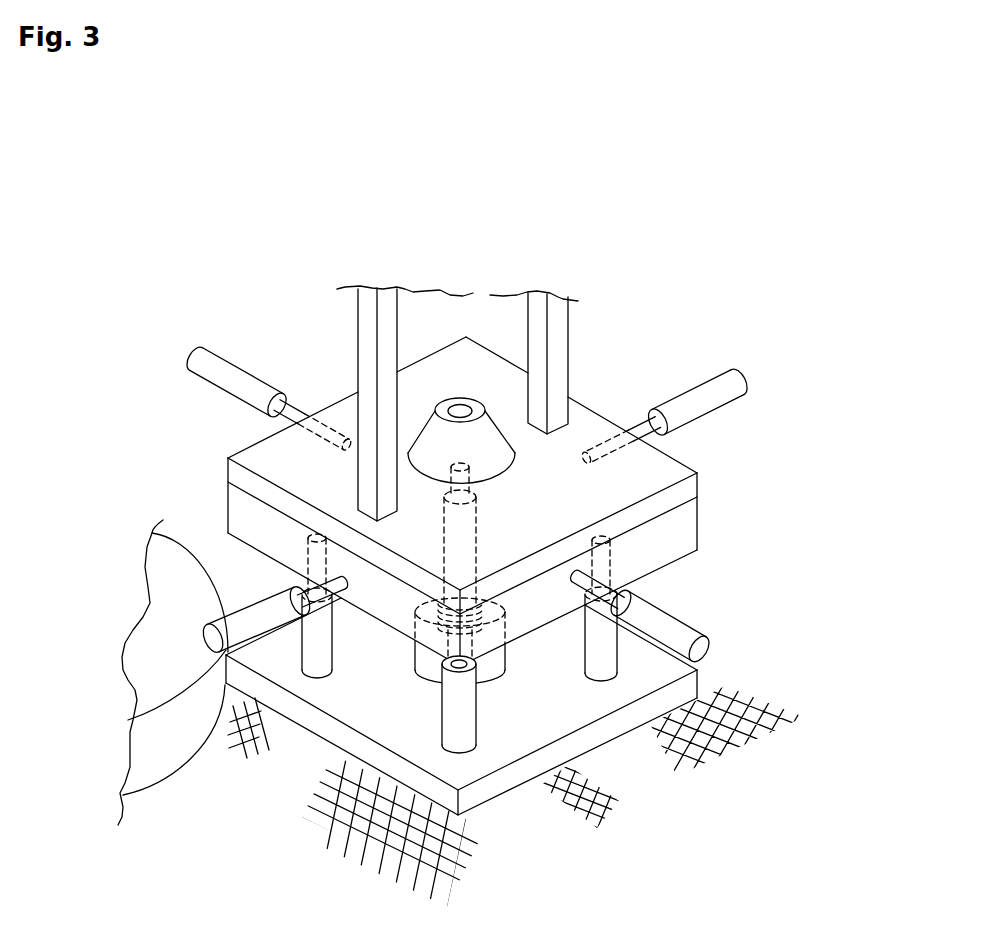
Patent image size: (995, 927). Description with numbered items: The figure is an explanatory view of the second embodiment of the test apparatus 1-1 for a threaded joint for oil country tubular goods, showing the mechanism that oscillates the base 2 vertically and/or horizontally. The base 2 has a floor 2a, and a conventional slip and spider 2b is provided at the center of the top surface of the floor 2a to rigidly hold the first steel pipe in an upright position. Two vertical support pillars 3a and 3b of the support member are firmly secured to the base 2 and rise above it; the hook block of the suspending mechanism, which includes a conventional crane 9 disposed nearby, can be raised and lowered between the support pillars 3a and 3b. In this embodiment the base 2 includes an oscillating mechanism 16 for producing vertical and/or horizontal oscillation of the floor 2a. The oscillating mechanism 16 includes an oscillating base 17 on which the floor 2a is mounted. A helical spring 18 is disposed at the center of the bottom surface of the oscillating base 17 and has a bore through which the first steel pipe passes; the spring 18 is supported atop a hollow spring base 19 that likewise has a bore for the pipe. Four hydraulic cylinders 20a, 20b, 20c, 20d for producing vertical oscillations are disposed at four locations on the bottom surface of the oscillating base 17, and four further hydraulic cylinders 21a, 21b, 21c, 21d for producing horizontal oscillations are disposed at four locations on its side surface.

The test apparatus 1-1 is at (503, 371).
The base 2 is at (514, 501).
The floor 2a is at (586, 419).
The spider 2b is at (498, 461).
The support pillar 3a is at (358, 346).
The support pillar 3b is at (569, 323).
The crane 9 is at (176, 528).
The oscillating mechanism 16 is at (724, 592).
The oscillating base 17 is at (689, 530).
The helical spring 18 is at (505, 620).
The spring base 19 is at (420, 676).
The hydraulic cylinder 20a is at (317, 676).
The hydraulic cylinder 20b is at (475, 748).
The hydraulic cylinder 20c is at (607, 680).
The hydraulic cylinder 20d is at (445, 537).
The hydraulic cylinder 21a is at (247, 607).
The hydraulic cylinder 21b is at (712, 649).
The hydraulic cylinder 21c is at (701, 378).
The hydraulic cylinder 21d is at (246, 372).